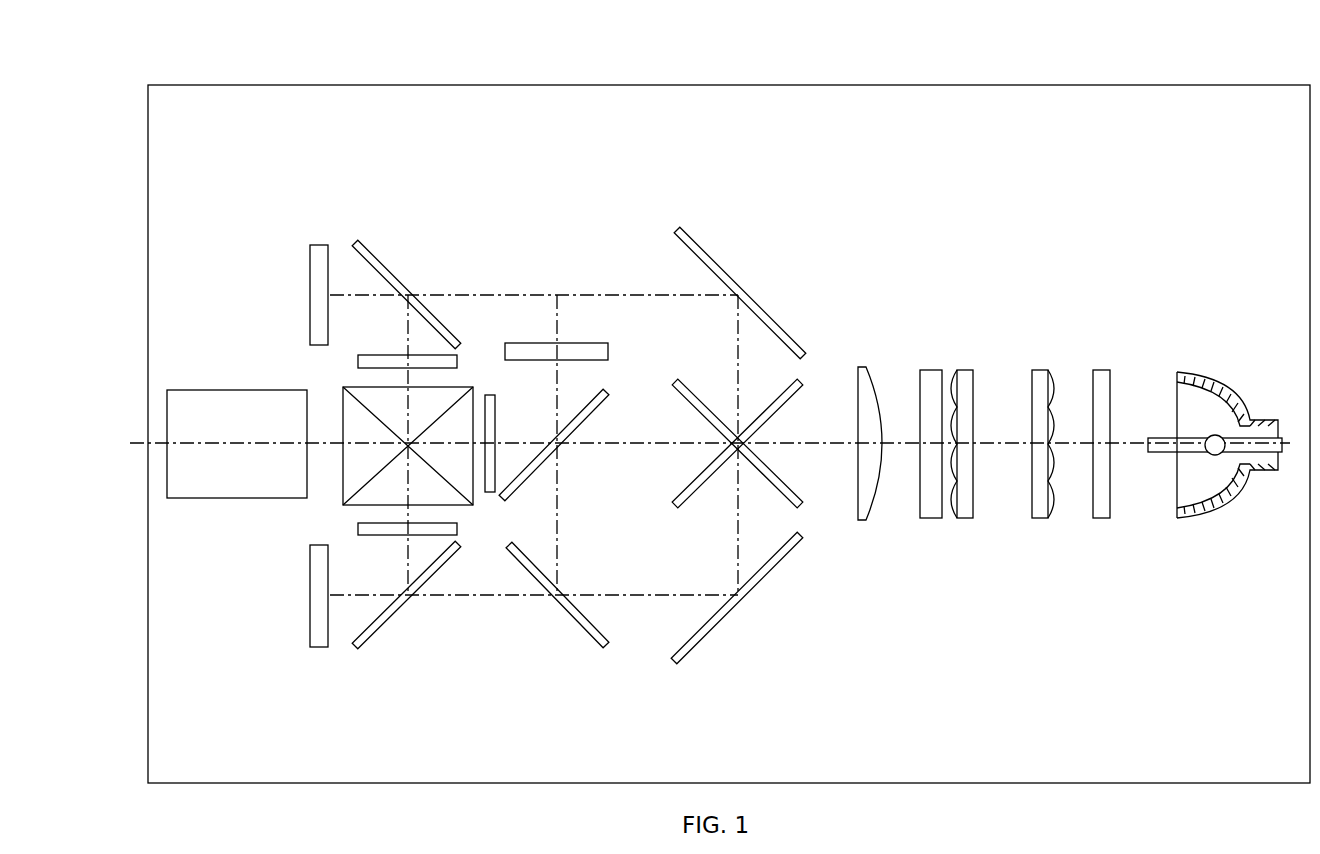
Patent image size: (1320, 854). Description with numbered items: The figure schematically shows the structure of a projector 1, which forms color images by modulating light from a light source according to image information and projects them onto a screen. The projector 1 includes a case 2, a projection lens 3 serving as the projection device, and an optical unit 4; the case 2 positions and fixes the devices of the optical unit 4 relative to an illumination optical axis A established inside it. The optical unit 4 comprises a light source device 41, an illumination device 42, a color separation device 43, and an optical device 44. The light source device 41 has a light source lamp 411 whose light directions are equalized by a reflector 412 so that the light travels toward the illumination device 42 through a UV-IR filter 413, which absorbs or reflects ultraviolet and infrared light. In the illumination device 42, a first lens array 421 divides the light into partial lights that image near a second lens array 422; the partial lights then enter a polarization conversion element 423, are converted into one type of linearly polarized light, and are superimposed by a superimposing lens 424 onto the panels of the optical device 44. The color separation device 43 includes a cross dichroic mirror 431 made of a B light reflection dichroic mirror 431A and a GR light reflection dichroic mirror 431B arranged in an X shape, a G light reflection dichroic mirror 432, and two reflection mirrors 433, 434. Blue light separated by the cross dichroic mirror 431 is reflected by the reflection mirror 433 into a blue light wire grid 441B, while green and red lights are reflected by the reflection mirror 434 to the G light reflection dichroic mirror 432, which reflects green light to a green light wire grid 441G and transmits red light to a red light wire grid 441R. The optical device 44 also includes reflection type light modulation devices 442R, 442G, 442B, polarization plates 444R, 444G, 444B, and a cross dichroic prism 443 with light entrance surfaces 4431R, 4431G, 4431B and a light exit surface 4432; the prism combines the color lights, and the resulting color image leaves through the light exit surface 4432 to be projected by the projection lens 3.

The projector 1 is at (930, 68).
The case 2 is at (272, 85).
The projection lens 3 is at (185, 388).
The optical unit 4 is at (964, 245).
The light source device 41 is at (1247, 329).
The light source lamp 411 is at (1160, 437).
The reflector 412 is at (1212, 384).
The UV-IR filter 413 is at (1102, 370).
The illumination device 42 is at (1075, 588).
The first lens array 421 is at (1040, 520).
The second lens array 422 is at (965, 519).
The polarization conversion element 423 is at (927, 519).
The superimposing lens 424 is at (862, 521).
The color separation device 43 is at (790, 622).
The cross dichroic mirror 431 is at (612, 420).
The B light reflection dichroic mirror 431A is at (693, 403).
The GR light reflection dichroic mirror 431B is at (693, 480).
The G light reflection dichroic mirror 432 is at (578, 630).
The reflection mirror 433 is at (725, 270).
The reflection mirror 434 is at (702, 643).
The optical device 44 is at (265, 605).
The blue light wire grid 441B is at (388, 273).
The green light wire grid 441G is at (523, 478).
The red light wire grid 441R is at (382, 630).
The reflection type light modulation device for blue 442B is at (320, 243).
The reflection type light modulation device for green 442G is at (528, 343).
The reflection type light modulation device for red 442R is at (318, 648).
The cross dichroic prism 443 is at (343, 412).
The light entrance surface for blue 4431B is at (470, 385).
The light entrance surface for green 4431G is at (476, 505).
The light entrance surface for red 4431R is at (353, 507).
The light exit surface 4432 is at (342, 388).
The polarization plate for blue 444B is at (377, 355).
The polarization plate for green 444G is at (527, 414).
The polarization plate for red 444R is at (373, 536).
The illumination optical axis A is at (818, 450).